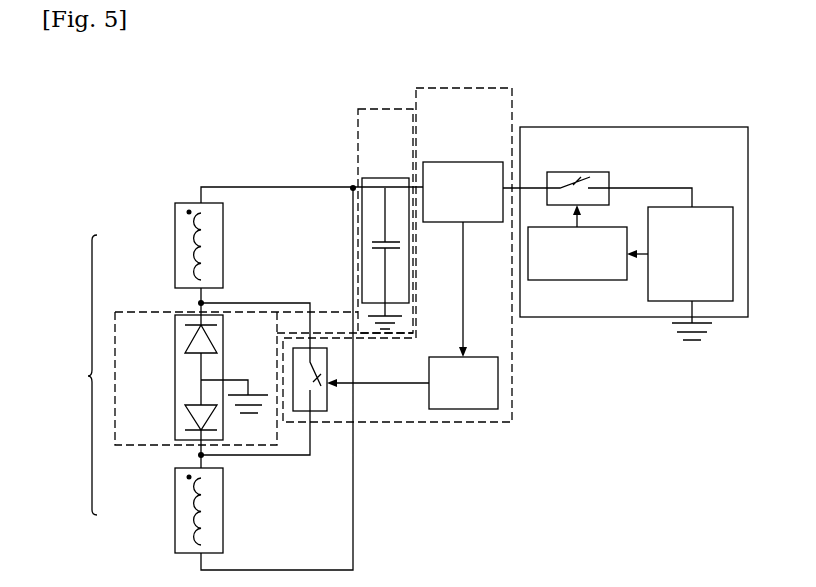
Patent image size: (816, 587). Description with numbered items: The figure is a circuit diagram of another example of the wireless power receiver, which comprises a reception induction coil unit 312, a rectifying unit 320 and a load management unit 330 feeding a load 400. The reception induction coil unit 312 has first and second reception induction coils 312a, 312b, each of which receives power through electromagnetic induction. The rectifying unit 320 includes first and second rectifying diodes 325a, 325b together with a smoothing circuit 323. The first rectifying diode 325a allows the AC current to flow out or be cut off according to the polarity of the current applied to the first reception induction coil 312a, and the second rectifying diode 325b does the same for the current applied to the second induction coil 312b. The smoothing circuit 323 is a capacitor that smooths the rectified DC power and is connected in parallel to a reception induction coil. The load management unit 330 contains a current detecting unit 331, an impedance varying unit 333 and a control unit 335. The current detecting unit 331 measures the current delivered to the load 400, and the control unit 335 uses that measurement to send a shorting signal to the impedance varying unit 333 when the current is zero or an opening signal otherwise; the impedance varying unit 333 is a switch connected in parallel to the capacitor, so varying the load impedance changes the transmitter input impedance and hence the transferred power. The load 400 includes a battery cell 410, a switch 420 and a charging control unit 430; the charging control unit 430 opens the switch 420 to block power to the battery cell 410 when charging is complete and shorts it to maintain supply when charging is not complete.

The reception induction coil unit 312 is at (70, 375).
The first reception induction coil 312a is at (175, 243).
The second reception induction coil 312b is at (175, 507).
The first rectifying diode 325a is at (185, 338).
The second rectifying diode 325b is at (185, 415).
The rectifying unit 320 is at (387, 109).
The smoothing circuit 323 is at (385, 178).
The load management unit 330 is at (460, 88).
The current detecting unit 331 is at (465, 162).
The impedance varying unit 333 is at (312, 348).
The control unit 335 is at (465, 409).
The load 400 is at (628, 127).
The battery cell 410 is at (748, 255).
The switch 420 is at (577, 172).
The charging control unit 430 is at (580, 280).